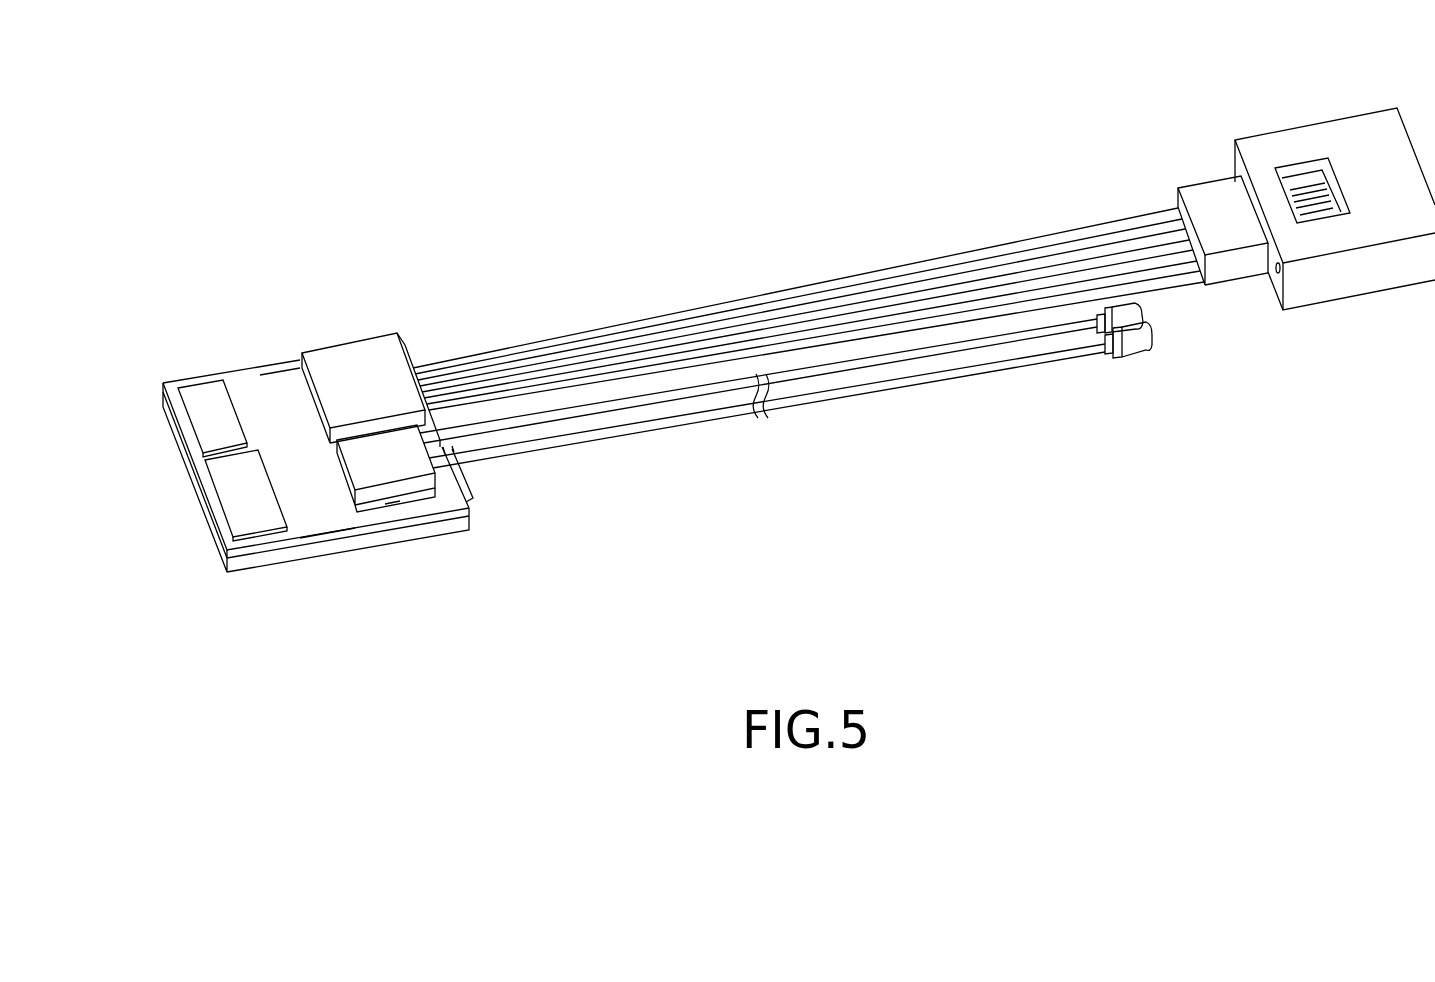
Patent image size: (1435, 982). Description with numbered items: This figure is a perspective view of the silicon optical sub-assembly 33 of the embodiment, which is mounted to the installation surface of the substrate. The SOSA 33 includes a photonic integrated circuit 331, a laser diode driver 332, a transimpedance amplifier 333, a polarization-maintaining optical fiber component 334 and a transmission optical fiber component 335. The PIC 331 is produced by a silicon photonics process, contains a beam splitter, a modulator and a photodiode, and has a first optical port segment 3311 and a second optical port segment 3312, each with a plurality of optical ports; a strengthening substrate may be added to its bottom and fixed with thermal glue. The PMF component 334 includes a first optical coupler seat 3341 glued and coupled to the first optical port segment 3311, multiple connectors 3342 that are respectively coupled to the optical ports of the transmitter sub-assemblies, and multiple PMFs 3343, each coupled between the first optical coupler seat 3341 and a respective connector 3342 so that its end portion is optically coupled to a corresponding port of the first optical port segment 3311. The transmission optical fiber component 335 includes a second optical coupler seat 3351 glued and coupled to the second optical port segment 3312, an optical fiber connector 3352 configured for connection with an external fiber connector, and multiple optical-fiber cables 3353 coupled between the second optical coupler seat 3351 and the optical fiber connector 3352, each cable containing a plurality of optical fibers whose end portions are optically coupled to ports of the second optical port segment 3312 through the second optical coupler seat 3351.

The silicon optical sub-assembly 33 is at (232, 92).
The photonic integrated circuit 331 is at (183, 382).
The first optical port segment 3311 is at (343, 488).
The second optical port segment 3312 is at (307, 398).
The laser diode driver 332 is at (228, 498).
The transimpedance amplifier 333 is at (195, 412).
The polarization-maintaining optical fiber component 334 is at (762, 448).
The first optical coupler seat 3341 is at (397, 465).
The connectors 3342 is at (1138, 378).
The polarization-maintaining optical fibers 3343 is at (827, 373).
The transmission optical fiber component 335 is at (867, 245).
The second optical coupler seat 3351 is at (343, 352).
The optical fiber connector 3352 is at (1335, 184).
The optical-fiber cables 3353 is at (818, 322).